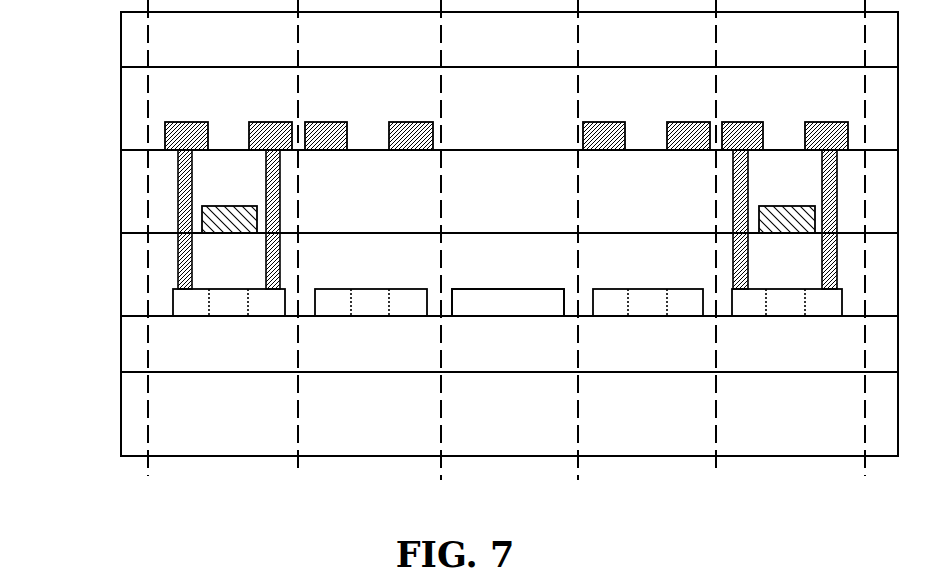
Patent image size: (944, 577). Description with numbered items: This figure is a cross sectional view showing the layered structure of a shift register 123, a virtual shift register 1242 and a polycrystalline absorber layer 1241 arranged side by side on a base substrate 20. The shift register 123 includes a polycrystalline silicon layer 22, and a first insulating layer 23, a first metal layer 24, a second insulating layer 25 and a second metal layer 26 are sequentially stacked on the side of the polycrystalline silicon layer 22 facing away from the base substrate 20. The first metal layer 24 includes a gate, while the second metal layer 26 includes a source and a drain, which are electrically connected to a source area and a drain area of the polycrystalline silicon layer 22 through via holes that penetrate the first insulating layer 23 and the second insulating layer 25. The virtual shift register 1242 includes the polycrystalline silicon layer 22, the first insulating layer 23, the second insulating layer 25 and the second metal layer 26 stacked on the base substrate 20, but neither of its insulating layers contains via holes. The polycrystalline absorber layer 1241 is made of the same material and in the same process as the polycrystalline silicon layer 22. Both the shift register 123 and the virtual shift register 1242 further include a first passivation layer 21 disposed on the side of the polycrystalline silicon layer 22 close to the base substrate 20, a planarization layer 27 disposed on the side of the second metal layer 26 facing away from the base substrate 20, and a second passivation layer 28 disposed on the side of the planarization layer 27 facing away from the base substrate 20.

The base substrate 20 is at (121, 432).
The first passivation layer 21 is at (121, 349).
The polycrystalline silicon layer 22 is at (173, 308).
The first insulating layer 23 is at (121, 250).
The first metal layer 24 is at (202, 222).
The second insulating layer 25 is at (121, 175).
The second metal layer 26 is at (165, 139).
The planarization layer 27 is at (121, 90).
The second passivation layer 28 is at (121, 40).
The shift register 123 is at (148, 475).
The polycrystalline absorber layer 1241 is at (509, 307).
The virtual shift register 1242 is at (441, 473).